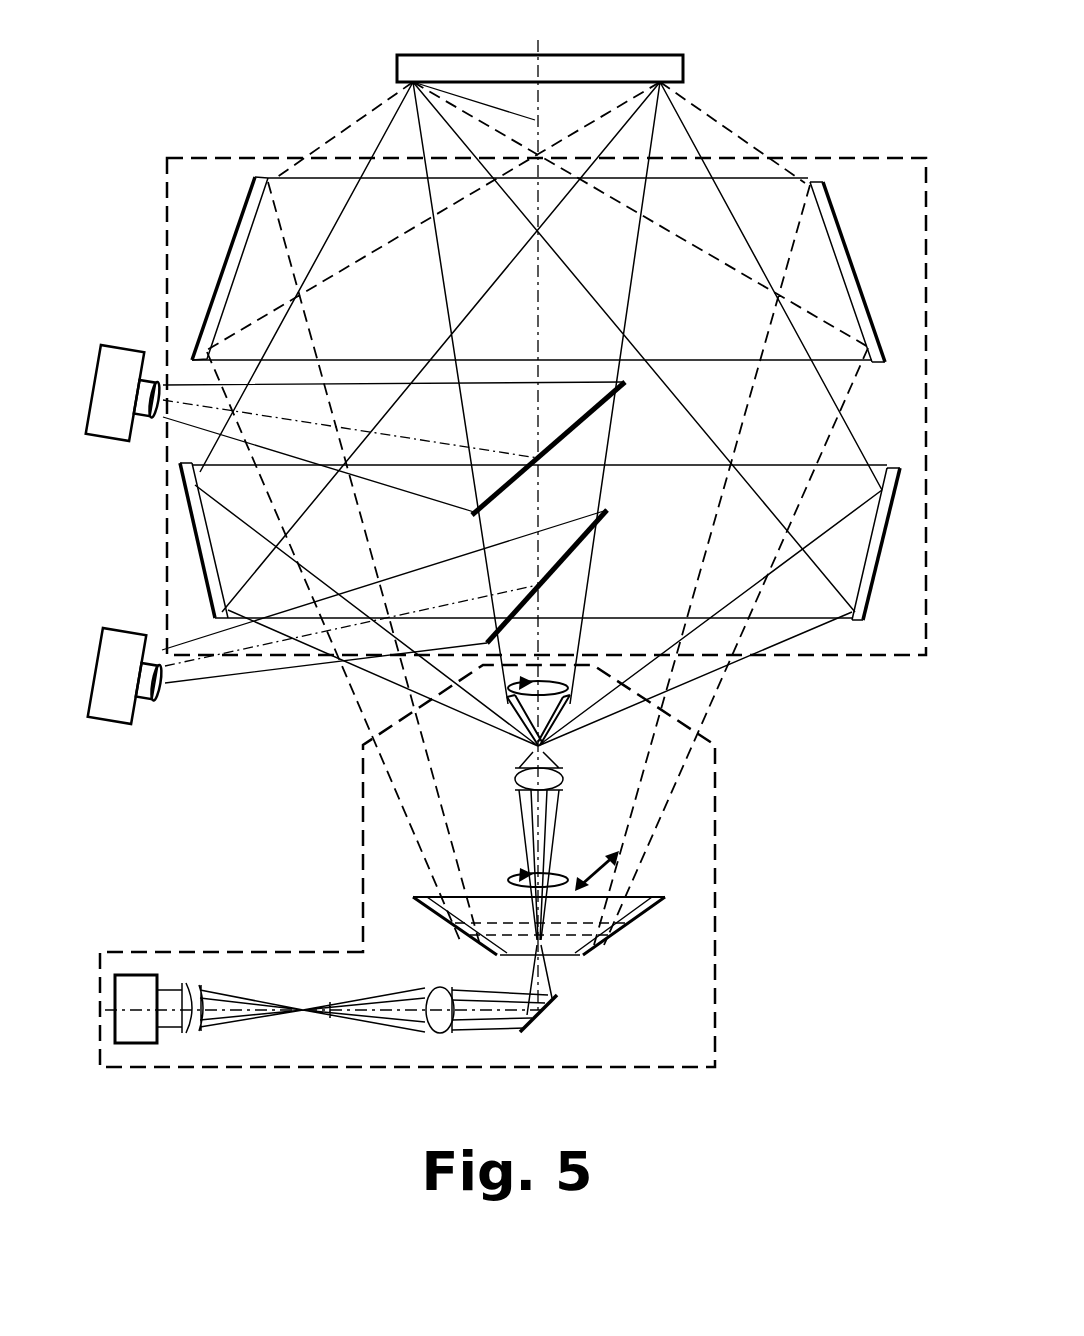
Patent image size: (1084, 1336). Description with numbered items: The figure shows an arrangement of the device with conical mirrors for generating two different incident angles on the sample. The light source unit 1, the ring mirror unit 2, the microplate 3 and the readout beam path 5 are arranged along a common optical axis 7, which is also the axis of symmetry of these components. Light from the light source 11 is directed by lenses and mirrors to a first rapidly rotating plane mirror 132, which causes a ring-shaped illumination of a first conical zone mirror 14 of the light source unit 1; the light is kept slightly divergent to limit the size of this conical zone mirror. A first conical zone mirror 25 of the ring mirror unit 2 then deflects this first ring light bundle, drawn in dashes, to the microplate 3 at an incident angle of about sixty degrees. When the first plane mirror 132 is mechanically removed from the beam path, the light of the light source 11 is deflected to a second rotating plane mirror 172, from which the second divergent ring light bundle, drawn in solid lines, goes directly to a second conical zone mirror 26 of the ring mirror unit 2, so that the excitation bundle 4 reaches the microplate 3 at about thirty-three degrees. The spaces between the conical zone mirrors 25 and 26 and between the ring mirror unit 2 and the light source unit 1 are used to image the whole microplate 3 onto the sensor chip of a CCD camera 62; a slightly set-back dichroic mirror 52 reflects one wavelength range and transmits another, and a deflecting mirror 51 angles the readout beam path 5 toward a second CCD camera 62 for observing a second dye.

The light source unit 1 is at (717, 912).
The ring mirror unit 2 is at (842, 660).
The microplate 3 is at (622, 68).
The excitation bundle 4 is at (320, 143).
The readout beam path 5 is at (420, 147).
The optical axis 7 is at (413, 82).
The light source 11 is at (140, 983).
The first conical zone mirror 14 is at (665, 897).
The first conical zone mirror 25 is at (857, 283).
The second conical zone mirror 26 is at (886, 527).
The deflecting mirror 51 is at (570, 553).
The dichroic mirror 52 is at (588, 418).
The CCD camera 62 is at (108, 440).
The first rotating plane mirror 132 is at (413, 897).
The second rotating plane mirror 172 is at (517, 727).